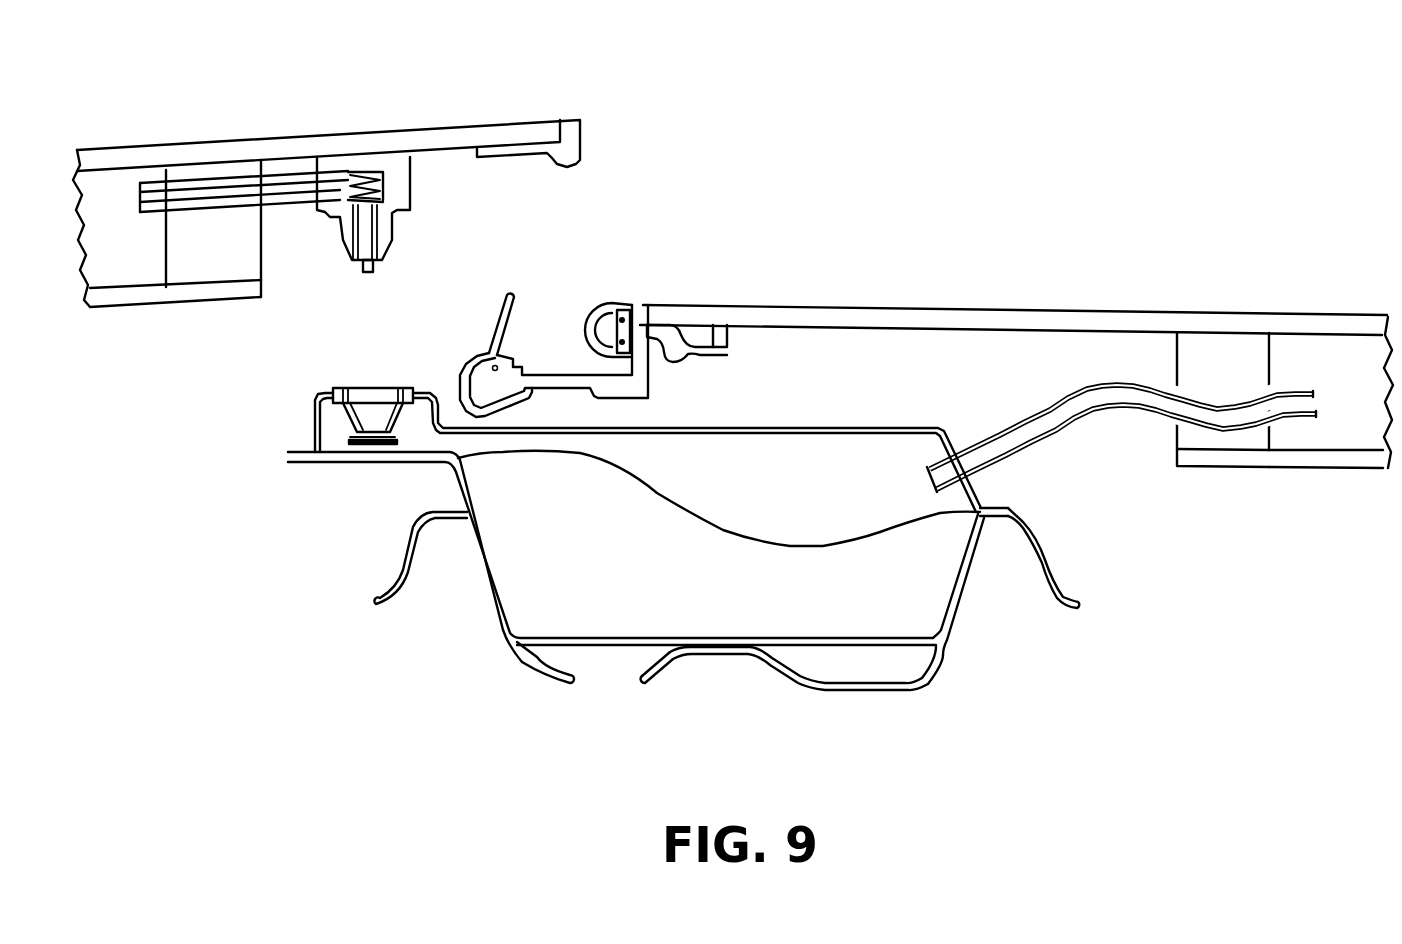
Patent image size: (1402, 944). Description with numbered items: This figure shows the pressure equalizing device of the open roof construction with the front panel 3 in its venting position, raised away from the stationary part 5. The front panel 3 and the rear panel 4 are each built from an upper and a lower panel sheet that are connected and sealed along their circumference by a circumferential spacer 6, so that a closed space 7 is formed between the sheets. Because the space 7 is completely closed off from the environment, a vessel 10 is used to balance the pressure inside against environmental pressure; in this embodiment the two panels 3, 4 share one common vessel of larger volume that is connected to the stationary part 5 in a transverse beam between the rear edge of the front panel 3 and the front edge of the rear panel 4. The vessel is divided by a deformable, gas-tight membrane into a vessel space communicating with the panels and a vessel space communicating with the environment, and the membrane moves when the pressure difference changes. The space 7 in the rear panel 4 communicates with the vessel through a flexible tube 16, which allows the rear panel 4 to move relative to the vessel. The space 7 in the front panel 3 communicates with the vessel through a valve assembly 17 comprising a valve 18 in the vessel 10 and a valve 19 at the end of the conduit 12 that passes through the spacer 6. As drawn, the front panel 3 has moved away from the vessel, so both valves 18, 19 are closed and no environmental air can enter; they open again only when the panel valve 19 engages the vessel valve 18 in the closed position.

The front panel 3 is at (268, 120).
The conduit 12 is at (153, 200).
The valve 19 is at (380, 200).
The valve assembly 17 is at (408, 271).
The rear panel 4 is at (1057, 303).
The flexible tube 16 is at (1135, 398).
The circumferential spacer 6 is at (1218, 373).
The space 7 is at (1308, 373).
The valve 18 is at (365, 445).
The vessel 10 is at (600, 645).
The stationary part 5 is at (938, 660).